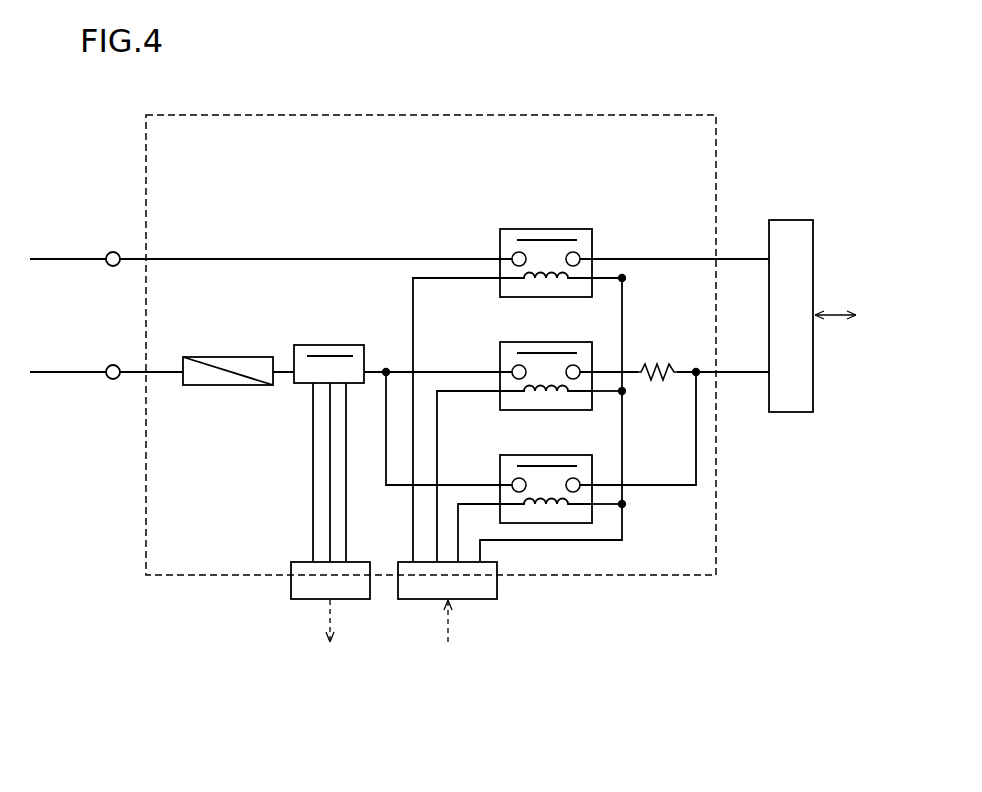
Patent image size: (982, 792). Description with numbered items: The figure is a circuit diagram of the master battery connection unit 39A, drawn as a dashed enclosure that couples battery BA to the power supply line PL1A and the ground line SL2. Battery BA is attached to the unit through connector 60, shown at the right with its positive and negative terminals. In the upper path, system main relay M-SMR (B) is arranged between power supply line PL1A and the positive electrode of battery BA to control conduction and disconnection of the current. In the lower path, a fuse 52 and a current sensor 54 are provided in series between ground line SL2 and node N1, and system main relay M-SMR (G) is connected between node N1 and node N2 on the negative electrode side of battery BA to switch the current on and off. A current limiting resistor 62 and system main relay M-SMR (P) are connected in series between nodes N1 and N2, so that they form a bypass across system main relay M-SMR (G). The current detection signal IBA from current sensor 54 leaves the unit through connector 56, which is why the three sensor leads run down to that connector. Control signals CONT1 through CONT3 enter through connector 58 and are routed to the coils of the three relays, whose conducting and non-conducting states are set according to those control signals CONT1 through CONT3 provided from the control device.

The master battery connection unit 39A is at (428, 114).
The power supply line PL1A is at (68, 256).
The ground line SL2 is at (66, 369).
The fuse 52 is at (229, 356).
The current sensor 54 is at (329, 344).
The node N1 is at (386, 368).
The node N2 is at (696, 364).
The current limiting resistor 62 is at (655, 361).
The connector 60 is at (789, 218).
The battery BA is at (854, 316).
The connector 56 is at (291, 586).
The connector 58 is at (497, 586).
The current detection signal IBA is at (329, 637).
The control signal CONT1 is at (482, 637).